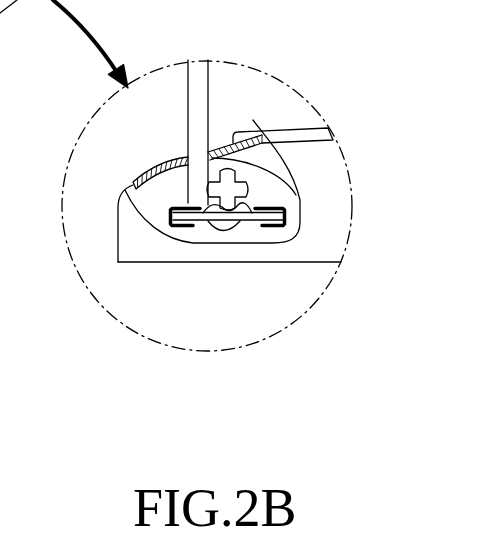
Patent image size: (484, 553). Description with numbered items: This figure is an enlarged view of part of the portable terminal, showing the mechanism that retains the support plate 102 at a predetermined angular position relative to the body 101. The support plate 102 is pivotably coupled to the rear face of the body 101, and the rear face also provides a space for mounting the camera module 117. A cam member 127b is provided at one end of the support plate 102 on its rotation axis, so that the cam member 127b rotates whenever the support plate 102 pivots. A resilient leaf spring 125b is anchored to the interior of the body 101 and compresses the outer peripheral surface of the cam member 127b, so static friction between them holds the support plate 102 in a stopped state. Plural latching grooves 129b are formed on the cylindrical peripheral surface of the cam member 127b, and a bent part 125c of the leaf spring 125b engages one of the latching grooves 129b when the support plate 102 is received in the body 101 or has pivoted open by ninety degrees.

The body 101 is at (113, 250).
The support plate 102 is at (207, 93).
The camera module 117 is at (298, 122).
The leaf spring 125b is at (237, 222).
The bent part of the leaf spring 125c is at (210, 222).
The cam member 127b is at (288, 172).
The latching grooves 129b is at (231, 191).